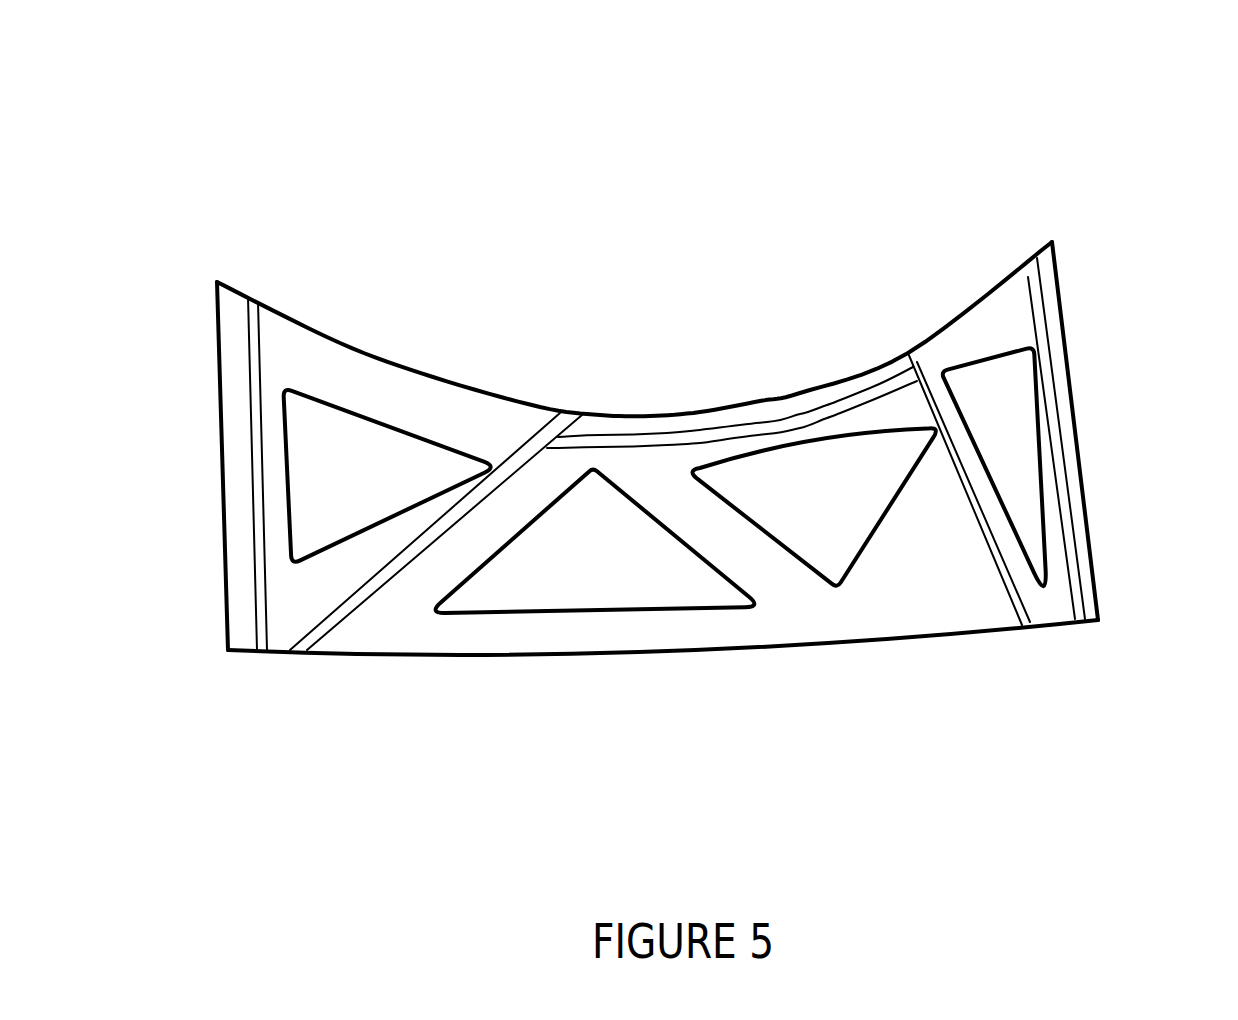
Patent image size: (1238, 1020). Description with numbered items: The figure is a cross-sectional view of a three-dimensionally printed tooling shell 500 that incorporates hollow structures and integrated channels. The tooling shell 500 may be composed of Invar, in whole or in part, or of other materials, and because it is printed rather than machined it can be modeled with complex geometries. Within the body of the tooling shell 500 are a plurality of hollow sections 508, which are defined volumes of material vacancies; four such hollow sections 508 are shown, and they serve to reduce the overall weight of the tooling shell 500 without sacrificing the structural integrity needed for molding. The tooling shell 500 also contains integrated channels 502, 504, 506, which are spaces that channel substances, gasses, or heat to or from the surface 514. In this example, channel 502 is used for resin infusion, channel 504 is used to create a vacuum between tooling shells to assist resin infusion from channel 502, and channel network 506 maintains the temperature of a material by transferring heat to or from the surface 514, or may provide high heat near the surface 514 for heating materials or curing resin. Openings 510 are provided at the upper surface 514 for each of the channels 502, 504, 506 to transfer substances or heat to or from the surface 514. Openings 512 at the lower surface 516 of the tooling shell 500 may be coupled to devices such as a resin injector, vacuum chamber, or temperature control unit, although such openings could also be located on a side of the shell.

The 3-D printed tooling shell 500 is at (182, 129).
The channel 502 is at (260, 522).
The channel 504 is at (1062, 470).
The channel network 506 is at (343, 613).
The hollow sections 508 is at (307, 540).
The openings 510 is at (253, 360).
The openings 512 is at (262, 656).
The surface 514 is at (433, 377).
The lower surface 516 is at (700, 653).